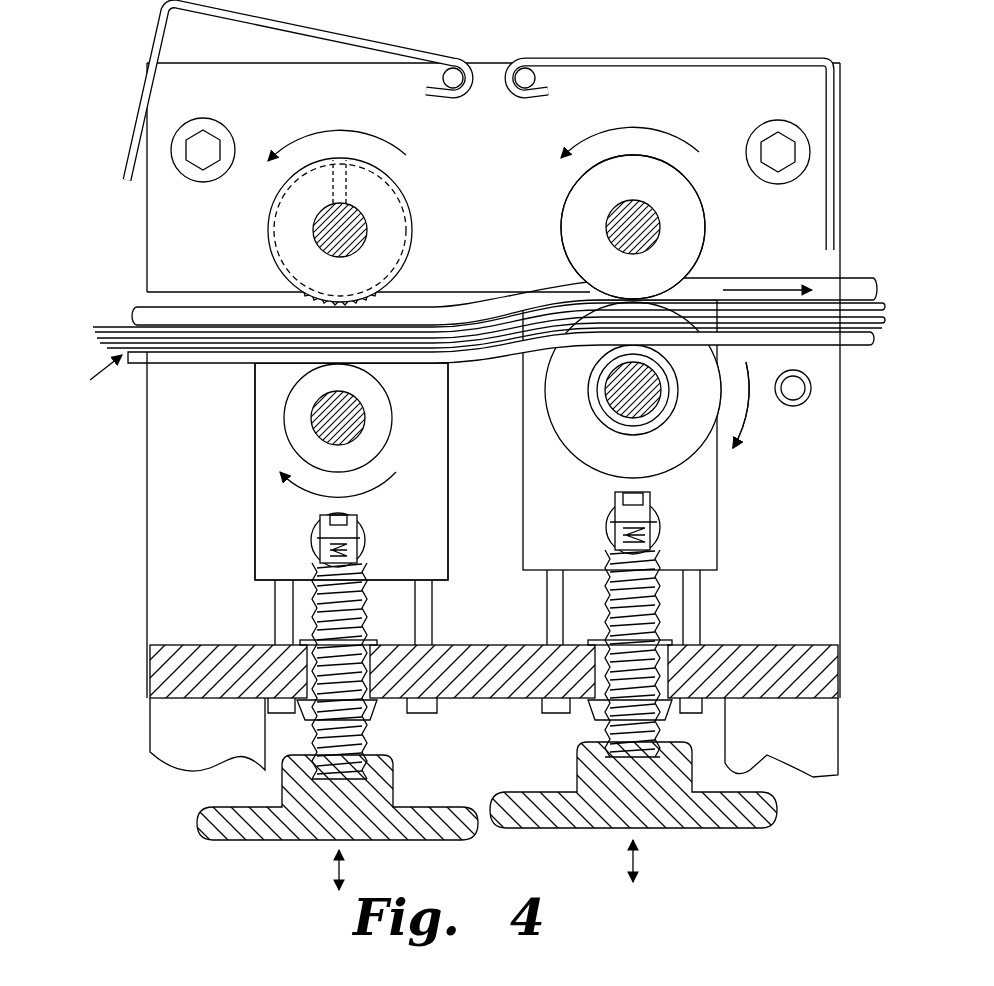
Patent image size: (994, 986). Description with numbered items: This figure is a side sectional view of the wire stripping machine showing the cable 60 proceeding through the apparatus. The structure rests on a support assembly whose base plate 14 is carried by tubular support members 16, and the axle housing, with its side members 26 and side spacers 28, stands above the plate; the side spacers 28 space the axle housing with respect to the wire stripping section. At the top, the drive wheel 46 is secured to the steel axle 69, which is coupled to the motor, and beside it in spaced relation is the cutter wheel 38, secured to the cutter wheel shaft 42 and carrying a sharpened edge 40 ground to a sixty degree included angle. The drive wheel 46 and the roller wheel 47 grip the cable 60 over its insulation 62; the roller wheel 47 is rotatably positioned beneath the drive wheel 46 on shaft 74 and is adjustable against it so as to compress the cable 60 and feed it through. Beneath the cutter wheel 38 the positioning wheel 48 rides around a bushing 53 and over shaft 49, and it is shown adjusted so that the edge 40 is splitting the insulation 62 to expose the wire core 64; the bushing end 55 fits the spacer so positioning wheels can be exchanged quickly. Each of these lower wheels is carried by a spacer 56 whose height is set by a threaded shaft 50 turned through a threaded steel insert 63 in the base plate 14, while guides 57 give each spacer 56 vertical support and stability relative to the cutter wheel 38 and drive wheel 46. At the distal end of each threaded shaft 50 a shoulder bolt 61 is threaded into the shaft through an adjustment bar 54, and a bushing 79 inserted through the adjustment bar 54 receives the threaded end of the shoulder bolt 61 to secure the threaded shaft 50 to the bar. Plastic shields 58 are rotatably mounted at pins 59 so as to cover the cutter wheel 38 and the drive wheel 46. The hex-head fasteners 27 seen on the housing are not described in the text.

The base plate 14 is at (150, 663).
The tubular support members 16 is at (148, 717).
The side members 26 is at (255, 407).
The hex head bolts 27 is at (180, 140).
The side spacers 28 is at (580, 95).
The cutter wheel 38 is at (685, 213).
The sharpened edge 40 is at (707, 222).
The cutter wheel shaft 42 is at (640, 200).
The drive wheel 46 is at (350, 160).
The roller wheel 47 is at (157, 387).
The positioning wheel 48 is at (697, 450).
The shaft 49 is at (600, 390).
The threaded shaft 50 is at (315, 730).
The bushing 53 is at (810, 398).
The adjustment bar 54 is at (312, 530).
The bushing end 55 is at (670, 383).
The spacer 56 is at (523, 472).
The guides 57 is at (432, 605).
The plastic shields 58 is at (155, 30).
The pins 59 is at (460, 70).
The cable 60 is at (81, 376).
The shoulder bolt 61 is at (317, 513).
The insulation 62 is at (137, 305).
The threaded steel inserts 63 is at (370, 663).
The wire core 64 is at (123, 325).
The axle 69 is at (310, 222).
The shaft 74 is at (387, 397).
The bushing 79 is at (312, 547).